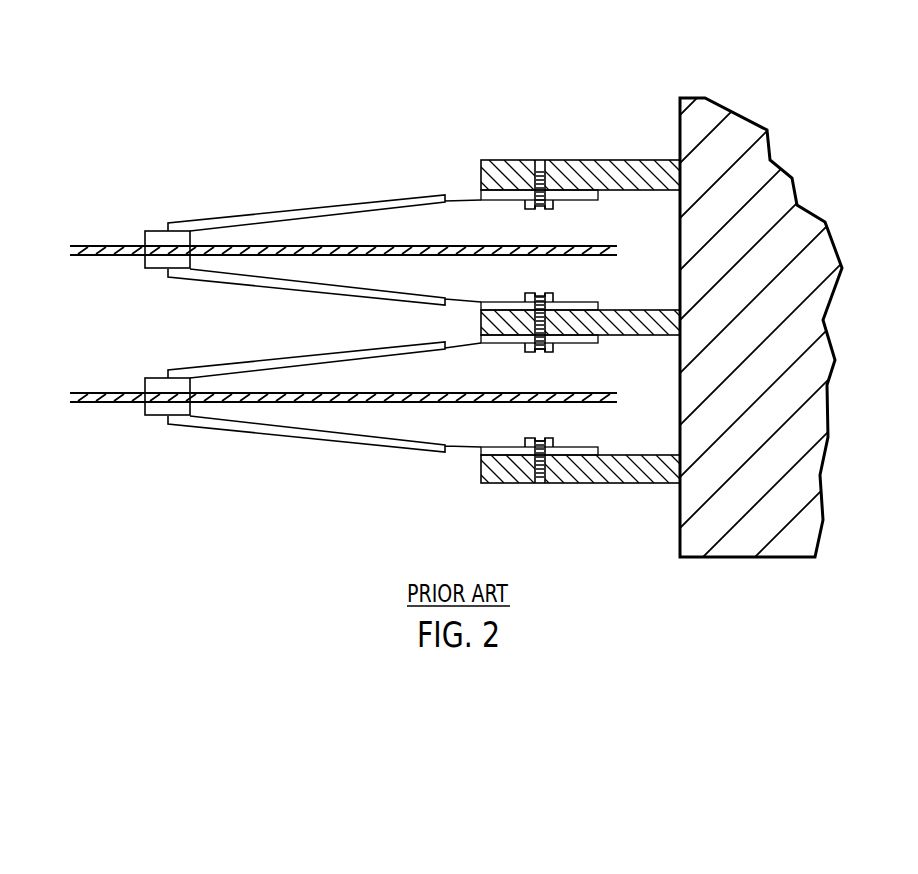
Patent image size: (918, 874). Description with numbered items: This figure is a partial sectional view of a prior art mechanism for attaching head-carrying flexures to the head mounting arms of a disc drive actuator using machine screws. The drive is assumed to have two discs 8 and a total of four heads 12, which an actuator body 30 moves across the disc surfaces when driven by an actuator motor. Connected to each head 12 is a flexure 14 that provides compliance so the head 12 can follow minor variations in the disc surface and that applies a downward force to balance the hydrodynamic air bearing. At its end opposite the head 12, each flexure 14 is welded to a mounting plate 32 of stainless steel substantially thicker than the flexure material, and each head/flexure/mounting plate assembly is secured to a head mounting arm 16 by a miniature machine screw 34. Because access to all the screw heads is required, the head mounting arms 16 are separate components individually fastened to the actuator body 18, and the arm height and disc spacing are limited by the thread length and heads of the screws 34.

The actuator body 30 is at (419, 78).
The actuator body 18 is at (745, 133).
The head mounting arm 16 is at (615, 170).
The mounting plate 32 is at (508, 193).
The miniature machine screw 34 is at (550, 206).
The flexure 14 is at (308, 290).
The head 12 is at (155, 262).
The disc 8 is at (93, 248).